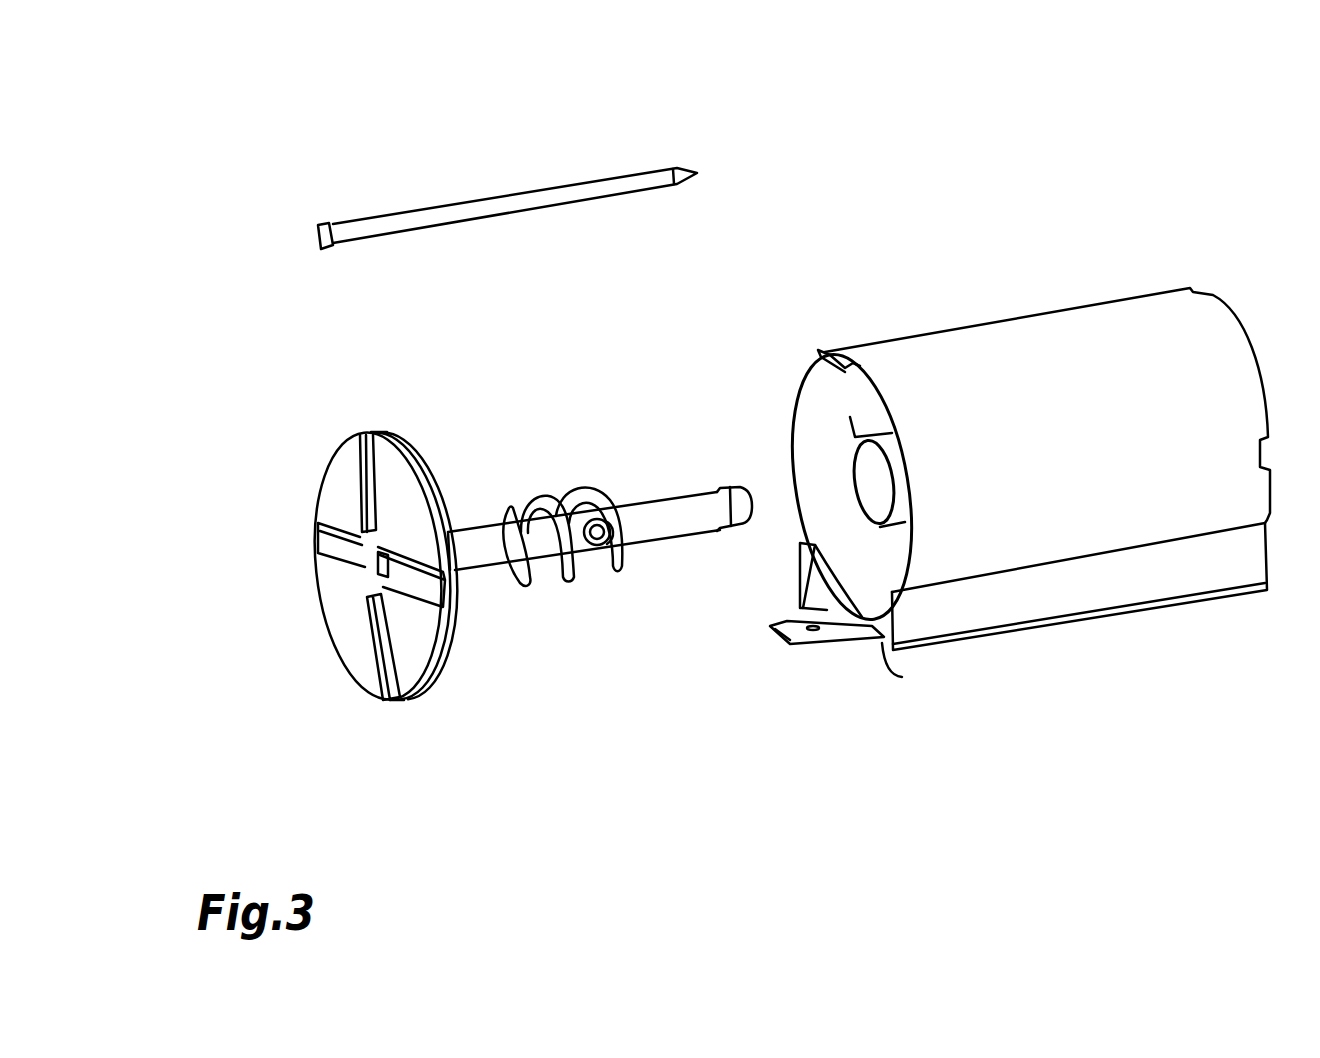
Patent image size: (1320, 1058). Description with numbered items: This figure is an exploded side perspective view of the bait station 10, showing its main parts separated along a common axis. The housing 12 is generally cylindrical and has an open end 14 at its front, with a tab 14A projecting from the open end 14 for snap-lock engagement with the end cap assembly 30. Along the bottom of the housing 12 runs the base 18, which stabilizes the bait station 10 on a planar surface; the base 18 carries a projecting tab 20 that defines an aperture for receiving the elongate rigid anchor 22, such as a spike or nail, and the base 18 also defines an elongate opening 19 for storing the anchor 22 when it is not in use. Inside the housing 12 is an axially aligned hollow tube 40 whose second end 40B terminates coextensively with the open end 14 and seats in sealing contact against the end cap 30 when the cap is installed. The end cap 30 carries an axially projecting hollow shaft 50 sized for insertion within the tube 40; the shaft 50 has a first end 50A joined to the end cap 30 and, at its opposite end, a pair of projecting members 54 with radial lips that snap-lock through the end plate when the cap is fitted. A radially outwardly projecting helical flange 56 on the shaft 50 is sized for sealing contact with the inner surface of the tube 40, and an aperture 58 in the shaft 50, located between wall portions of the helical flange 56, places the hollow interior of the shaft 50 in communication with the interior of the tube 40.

The bait station 10 is at (893, 198).
The housing 12 is at (1092, 444).
The open end 14 is at (797, 423).
The tab 14A is at (827, 350).
The base 18 is at (1099, 598).
The elongate opening 19 is at (902, 677).
The projecting tab 20 is at (793, 643).
The anchor 22 is at (490, 196).
The end cap assembly 30 is at (342, 433).
The tube 40 is at (897, 528).
The second end 40B is at (859, 456).
The shaft 50 is at (643, 522).
The first end 50A is at (463, 533).
The projecting members 54 is at (742, 520).
The helical flange 56 is at (591, 489).
The aperture 58 is at (606, 548).